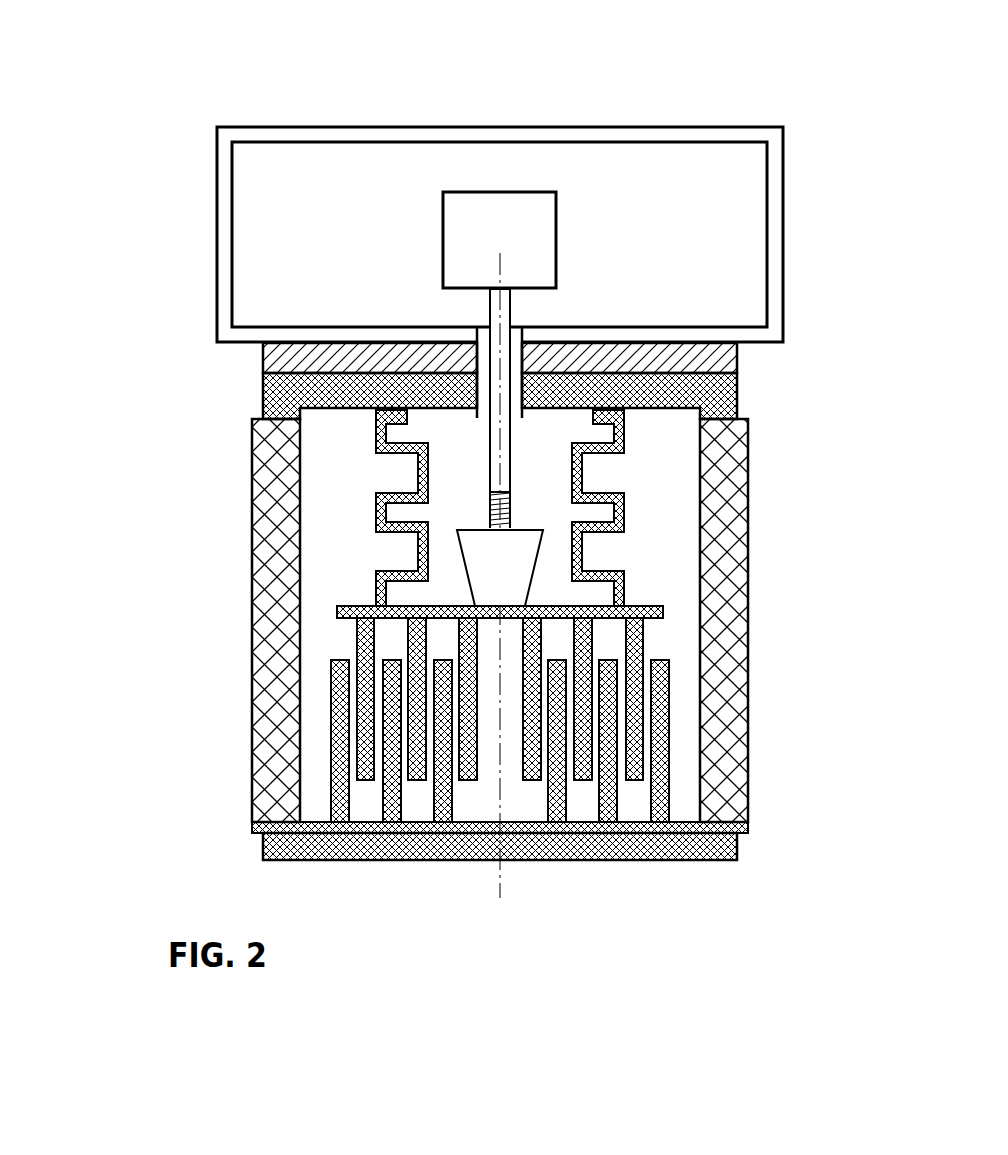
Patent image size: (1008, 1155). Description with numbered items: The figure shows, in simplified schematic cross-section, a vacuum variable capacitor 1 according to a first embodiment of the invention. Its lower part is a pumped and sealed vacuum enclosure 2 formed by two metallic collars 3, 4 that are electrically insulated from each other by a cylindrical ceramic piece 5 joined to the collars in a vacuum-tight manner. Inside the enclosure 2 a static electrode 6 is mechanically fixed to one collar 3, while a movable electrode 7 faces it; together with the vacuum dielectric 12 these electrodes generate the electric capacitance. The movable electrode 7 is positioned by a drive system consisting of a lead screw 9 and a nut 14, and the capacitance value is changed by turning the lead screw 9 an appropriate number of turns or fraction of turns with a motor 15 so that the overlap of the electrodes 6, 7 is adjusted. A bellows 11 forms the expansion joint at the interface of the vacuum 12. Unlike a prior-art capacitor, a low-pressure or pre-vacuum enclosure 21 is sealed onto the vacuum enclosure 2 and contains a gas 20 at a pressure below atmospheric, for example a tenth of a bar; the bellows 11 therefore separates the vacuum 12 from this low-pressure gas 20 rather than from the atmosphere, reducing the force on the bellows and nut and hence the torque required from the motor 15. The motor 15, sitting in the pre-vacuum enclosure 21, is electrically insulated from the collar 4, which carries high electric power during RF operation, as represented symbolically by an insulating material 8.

The vacuum variable capacitor 1 is at (135, 230).
The vacuum enclosure 2 is at (224, 646).
The metallic collar 3 is at (713, 862).
The metallic collar 4 is at (730, 392).
The cylindrical ceramic piece 5 is at (733, 595).
The static electrode 6 is at (668, 763).
The movable electrode 7 is at (642, 627).
The insulating material 8 is at (731, 358).
The lead screw 9 is at (500, 459).
The bellows 11 is at (630, 503).
The vacuum dielectric 12 is at (672, 457).
The nut 14 is at (490, 553).
The motor 15 is at (472, 213).
The low-pressure gas 20 is at (736, 257).
The pre-vacuum enclosure 21 is at (645, 135).